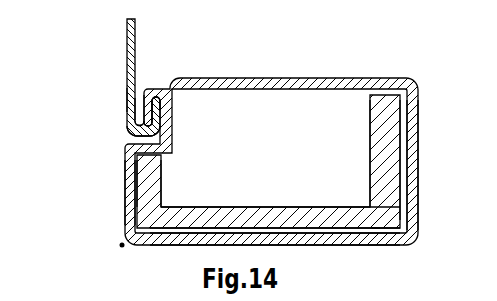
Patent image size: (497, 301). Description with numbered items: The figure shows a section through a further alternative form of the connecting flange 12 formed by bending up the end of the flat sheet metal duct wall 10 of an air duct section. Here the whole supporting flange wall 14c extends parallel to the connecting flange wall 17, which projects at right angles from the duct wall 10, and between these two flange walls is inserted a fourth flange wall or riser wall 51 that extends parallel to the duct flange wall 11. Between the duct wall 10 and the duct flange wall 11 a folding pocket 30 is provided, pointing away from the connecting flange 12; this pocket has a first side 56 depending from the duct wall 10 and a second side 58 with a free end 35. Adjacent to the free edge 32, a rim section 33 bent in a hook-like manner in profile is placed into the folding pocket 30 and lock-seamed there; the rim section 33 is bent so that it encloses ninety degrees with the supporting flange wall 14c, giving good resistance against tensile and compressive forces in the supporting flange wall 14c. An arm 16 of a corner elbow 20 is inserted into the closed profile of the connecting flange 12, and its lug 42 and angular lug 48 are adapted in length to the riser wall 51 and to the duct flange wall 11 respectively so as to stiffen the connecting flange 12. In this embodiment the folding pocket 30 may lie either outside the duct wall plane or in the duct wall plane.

The duct wall 10 is at (127, 28).
The supporting flange wall 14c is at (248, 80).
The free end 35 is at (150, 87).
The second side 58 is at (157, 110).
The fourth flange wall or riser wall 51 is at (413, 110).
The lug 42 is at (380, 158).
The first side 56 is at (127, 108).
The rim section 33 is at (136, 95).
The free edge 32 is at (126, 121).
The folding pocket 30 is at (130, 138).
The duct flange wall 11 is at (127, 186).
The angular lug 48 is at (140, 204).
The connecting flange 12 is at (121, 246).
The arm 16 is at (185, 229).
The connecting flange wall 17 is at (307, 244).
The corner elbow 20 is at (378, 212).